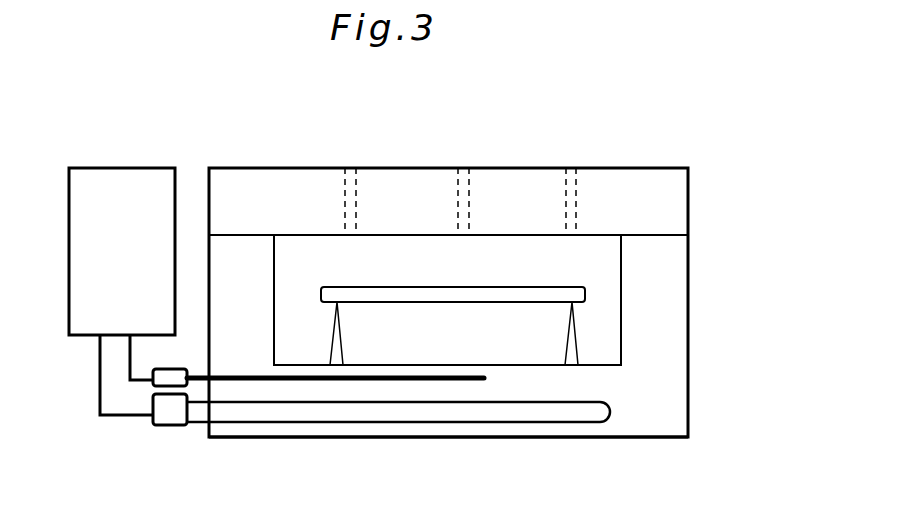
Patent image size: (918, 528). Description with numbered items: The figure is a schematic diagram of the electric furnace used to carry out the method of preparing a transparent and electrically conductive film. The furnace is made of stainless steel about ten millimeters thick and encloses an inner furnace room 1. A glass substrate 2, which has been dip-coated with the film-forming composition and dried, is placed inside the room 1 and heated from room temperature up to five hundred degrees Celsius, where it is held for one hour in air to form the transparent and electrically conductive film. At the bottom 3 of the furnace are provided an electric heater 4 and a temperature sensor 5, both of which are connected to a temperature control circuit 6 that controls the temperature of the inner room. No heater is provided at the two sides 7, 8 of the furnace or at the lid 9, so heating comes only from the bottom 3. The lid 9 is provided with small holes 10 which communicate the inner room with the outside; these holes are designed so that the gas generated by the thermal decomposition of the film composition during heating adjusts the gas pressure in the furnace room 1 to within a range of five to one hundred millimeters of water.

The room 1 is at (590, 250).
The substrate 2 is at (510, 285).
The bottom 3 is at (636, 420).
The electric heater 4 is at (440, 412).
The temperature sensor 5 is at (316, 380).
The temperature control circuit 6 is at (143, 188).
The side 7 is at (243, 352).
The side 8 is at (677, 306).
The lid 9 is at (390, 188).
The small holes 10 is at (460, 168).